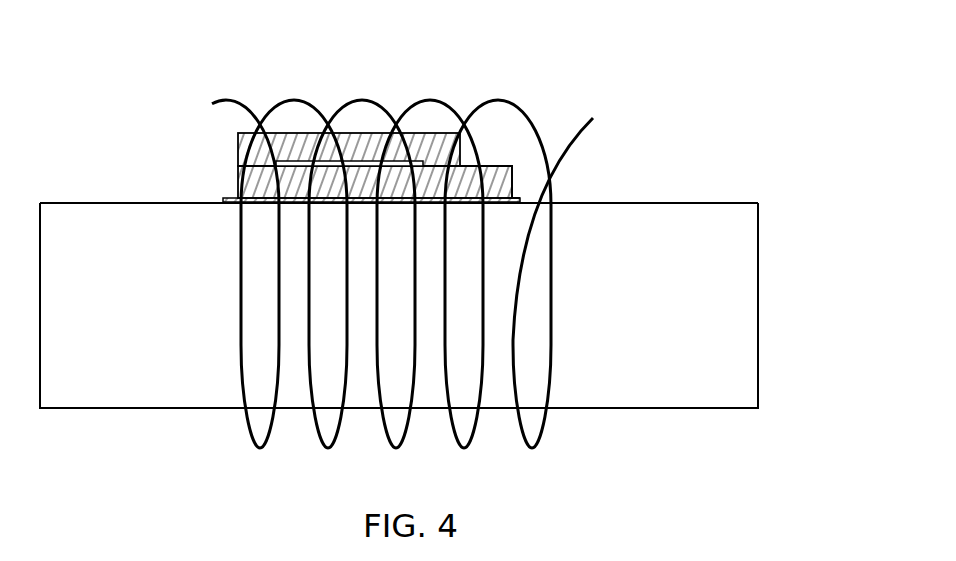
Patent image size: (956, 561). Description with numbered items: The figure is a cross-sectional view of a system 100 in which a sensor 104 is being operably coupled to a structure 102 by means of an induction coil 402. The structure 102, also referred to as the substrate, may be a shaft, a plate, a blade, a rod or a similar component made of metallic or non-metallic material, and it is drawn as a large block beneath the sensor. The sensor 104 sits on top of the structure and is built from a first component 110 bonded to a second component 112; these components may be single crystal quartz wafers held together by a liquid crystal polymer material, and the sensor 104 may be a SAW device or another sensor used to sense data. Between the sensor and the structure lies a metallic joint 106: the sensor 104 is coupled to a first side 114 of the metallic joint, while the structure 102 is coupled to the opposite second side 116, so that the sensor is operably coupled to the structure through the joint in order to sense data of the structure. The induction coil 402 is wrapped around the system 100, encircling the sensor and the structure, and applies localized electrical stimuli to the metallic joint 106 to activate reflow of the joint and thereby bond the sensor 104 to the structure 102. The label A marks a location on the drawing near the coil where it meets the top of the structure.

The system 100 is at (431, 238).
The structure 102 is at (763, 305).
The sensor 104 is at (334, 133).
The metallic joint 106 is at (521, 197).
The first component 110 is at (238, 137).
The second component 112 is at (238, 168).
The first side 114 is at (234, 194).
The second side 116 is at (230, 207).
The induction coil 402 is at (590, 127).
The point A is at (558, 196).